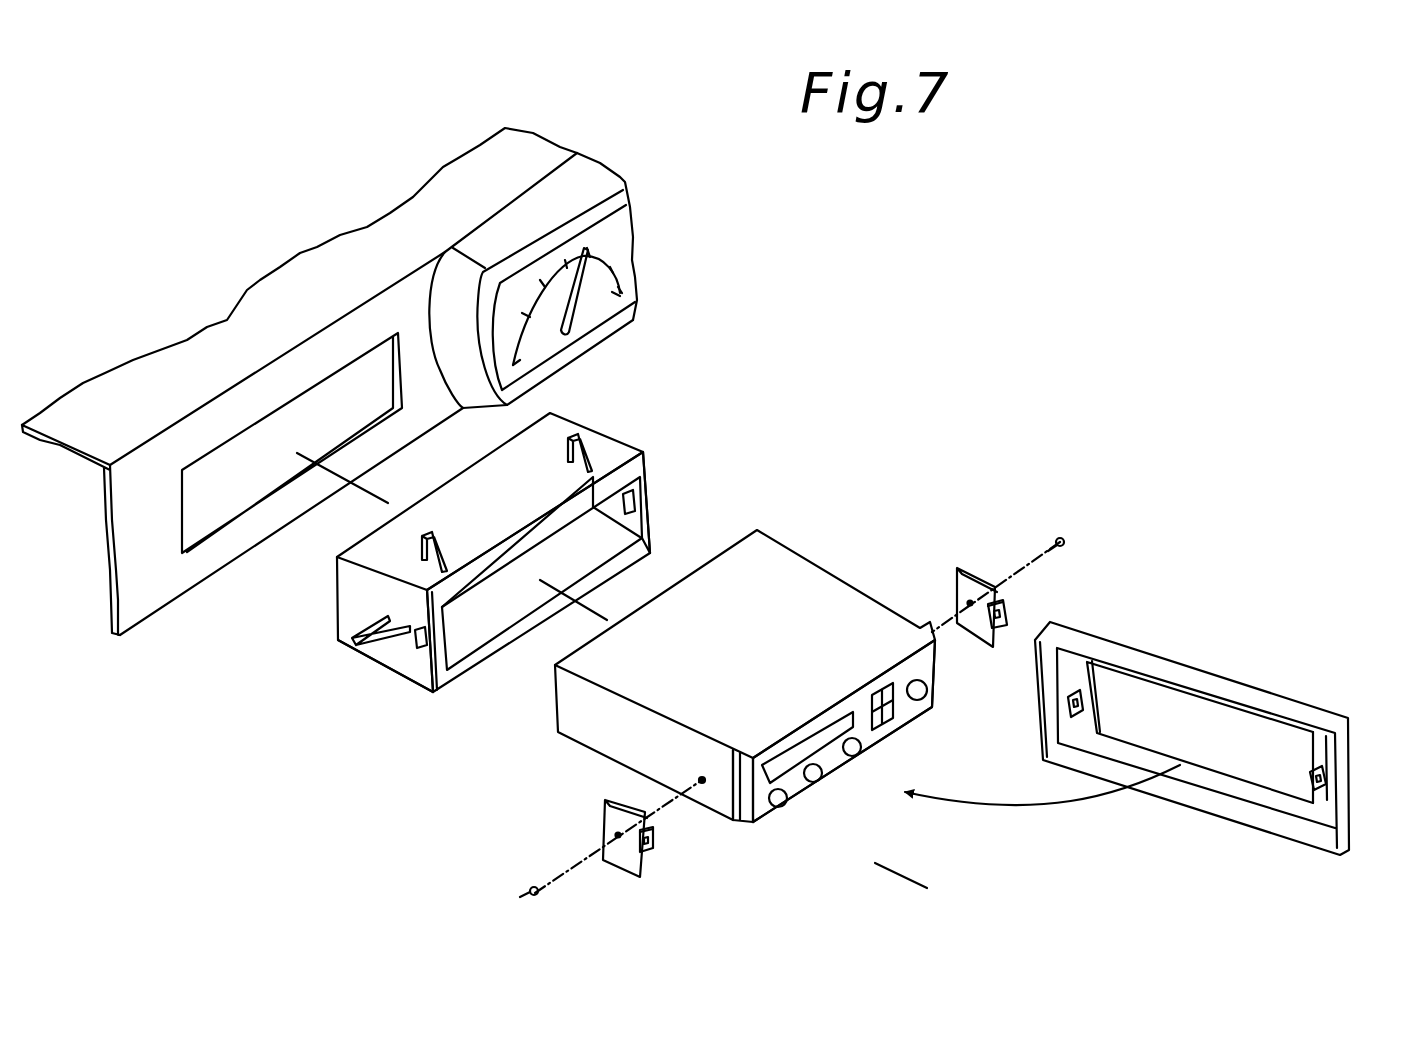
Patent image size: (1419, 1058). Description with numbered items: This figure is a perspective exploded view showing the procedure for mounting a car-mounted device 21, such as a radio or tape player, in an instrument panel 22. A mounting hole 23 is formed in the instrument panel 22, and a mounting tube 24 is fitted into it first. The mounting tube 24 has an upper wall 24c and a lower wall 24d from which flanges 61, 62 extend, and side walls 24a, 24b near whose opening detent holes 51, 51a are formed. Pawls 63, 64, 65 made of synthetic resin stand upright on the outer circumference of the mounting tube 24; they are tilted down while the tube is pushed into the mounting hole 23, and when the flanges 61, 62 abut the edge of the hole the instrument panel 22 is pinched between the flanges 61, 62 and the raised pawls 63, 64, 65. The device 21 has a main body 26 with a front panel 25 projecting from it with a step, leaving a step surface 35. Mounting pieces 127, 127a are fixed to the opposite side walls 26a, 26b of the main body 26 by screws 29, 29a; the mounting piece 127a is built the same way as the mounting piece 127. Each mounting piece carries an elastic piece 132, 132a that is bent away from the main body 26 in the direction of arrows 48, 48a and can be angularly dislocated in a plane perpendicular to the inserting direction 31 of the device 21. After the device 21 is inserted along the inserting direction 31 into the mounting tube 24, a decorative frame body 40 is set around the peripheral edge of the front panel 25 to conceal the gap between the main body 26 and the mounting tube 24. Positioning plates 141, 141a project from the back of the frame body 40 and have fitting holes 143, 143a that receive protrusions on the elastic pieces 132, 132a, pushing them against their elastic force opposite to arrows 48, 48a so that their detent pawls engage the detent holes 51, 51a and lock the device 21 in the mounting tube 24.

The car-mounted device 21 is at (727, 675).
The instrument panel 22 is at (160, 597).
The mounting hole 23 is at (210, 533).
The mounting tube 24 is at (497, 571).
The side wall of mounting tube 24a is at (337, 603).
The side wall of mounting tube 24b is at (640, 527).
The upper wall of mounting tube 24c is at (470, 485).
The lower wall of mounting tube 24d is at (389, 657).
The front panel 25 is at (793, 797).
The main body 26 is at (740, 582).
The side wall of main body 26a is at (623, 733).
The side wall of main body 26b is at (870, 592).
The screw 29 is at (525, 888).
The screw 29a is at (1065, 537).
The inserting direction 31 is at (903, 877).
The step surface 35 is at (743, 818).
The frame body 40 is at (1178, 718).
The arrow 48 is at (677, 848).
The arrow 48a is at (1018, 620).
The detent hole 51 is at (419, 660).
The detent hole 51a is at (636, 496).
The flange 61 is at (522, 527).
The flange 62 is at (498, 643).
The pawl 63 is at (442, 545).
The pawl 64 is at (593, 447).
The pawl 65 is at (380, 615).
The mounting piece 127 is at (603, 820).
The mounting piece 127a is at (967, 583).
The elastic piece 132 is at (653, 838).
The elastic piece 132a is at (1002, 608).
The positioning plate 141 is at (1327, 788).
The positioning plate 141a is at (1068, 718).
The fitting hole 143 is at (1330, 776).
The fitting hole 143a is at (1082, 703).